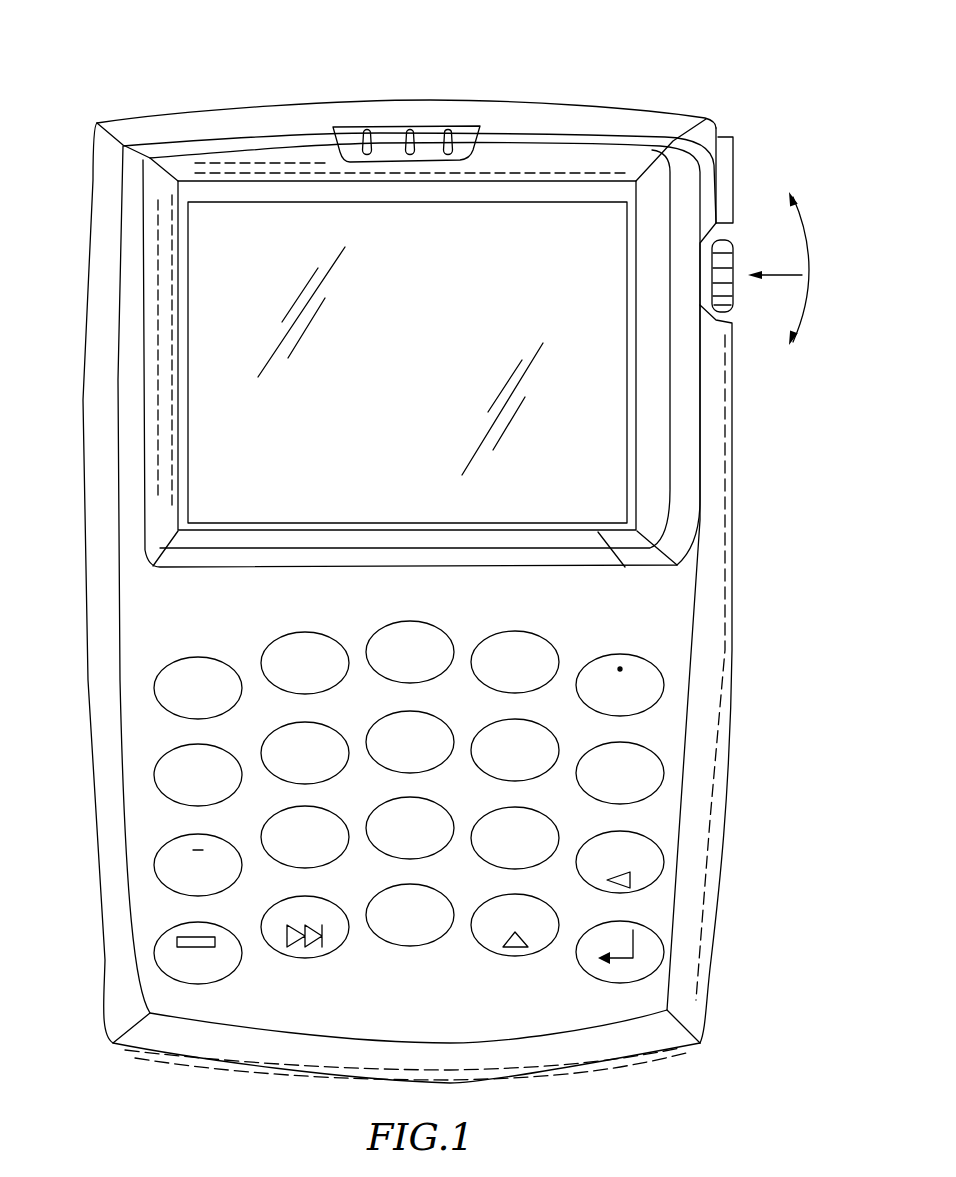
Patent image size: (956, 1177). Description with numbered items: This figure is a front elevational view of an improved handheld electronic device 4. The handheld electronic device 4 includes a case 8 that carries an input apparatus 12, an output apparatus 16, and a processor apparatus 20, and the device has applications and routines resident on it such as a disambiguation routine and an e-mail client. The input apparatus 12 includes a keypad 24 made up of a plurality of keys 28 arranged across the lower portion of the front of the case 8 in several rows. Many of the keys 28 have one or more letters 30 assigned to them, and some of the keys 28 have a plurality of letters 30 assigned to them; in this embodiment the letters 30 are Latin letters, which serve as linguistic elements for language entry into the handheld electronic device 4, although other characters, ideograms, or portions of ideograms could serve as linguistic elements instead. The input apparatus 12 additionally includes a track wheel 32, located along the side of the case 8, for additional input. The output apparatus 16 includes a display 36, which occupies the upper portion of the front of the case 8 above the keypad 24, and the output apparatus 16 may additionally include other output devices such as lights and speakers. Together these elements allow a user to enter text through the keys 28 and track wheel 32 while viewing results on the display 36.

The handheld electronic device 4 is at (523, 80).
The case 8 is at (616, 107).
The input apparatus 12 is at (750, 383).
The output apparatus 16 is at (303, 212).
The processor apparatus 20 is at (157, 601).
The keypad 24 is at (130, 800).
The keys 28 is at (317, 630).
The letters 30 is at (287, 675).
The track wheel 32 is at (730, 262).
The display 36 is at (203, 458).